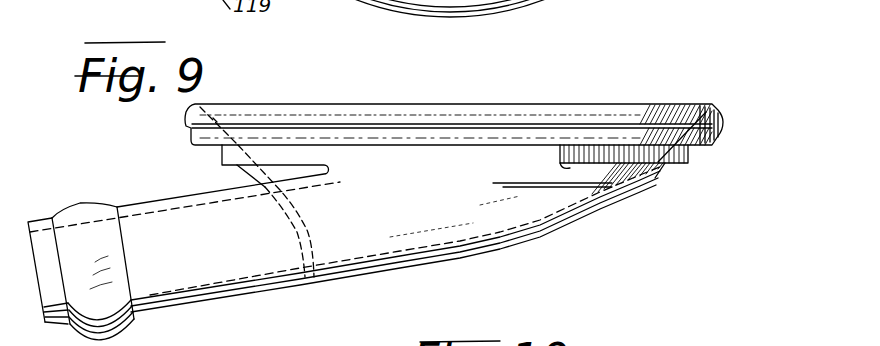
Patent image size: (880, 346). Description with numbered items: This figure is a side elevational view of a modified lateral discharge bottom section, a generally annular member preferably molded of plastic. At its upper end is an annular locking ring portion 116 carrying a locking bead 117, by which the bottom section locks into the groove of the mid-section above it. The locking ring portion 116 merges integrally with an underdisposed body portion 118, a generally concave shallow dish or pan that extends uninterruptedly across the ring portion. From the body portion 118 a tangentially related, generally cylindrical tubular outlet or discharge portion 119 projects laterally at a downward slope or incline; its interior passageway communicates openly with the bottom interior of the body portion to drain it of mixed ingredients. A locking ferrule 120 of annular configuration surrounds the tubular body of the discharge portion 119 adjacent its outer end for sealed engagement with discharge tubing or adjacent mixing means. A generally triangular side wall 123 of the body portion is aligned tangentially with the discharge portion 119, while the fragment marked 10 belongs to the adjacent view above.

The dimension line of adjacent figure 10 is at (455, 22).
The annular locking ring portion 116 is at (672, 105).
The locking bead 117 is at (723, 121).
The body portion 118 is at (573, 223).
The tubular outlet or discharge portion 119 is at (203, 299).
The locking ferrule 120 is at (85, 203).
The side wall 123 is at (436, 191).